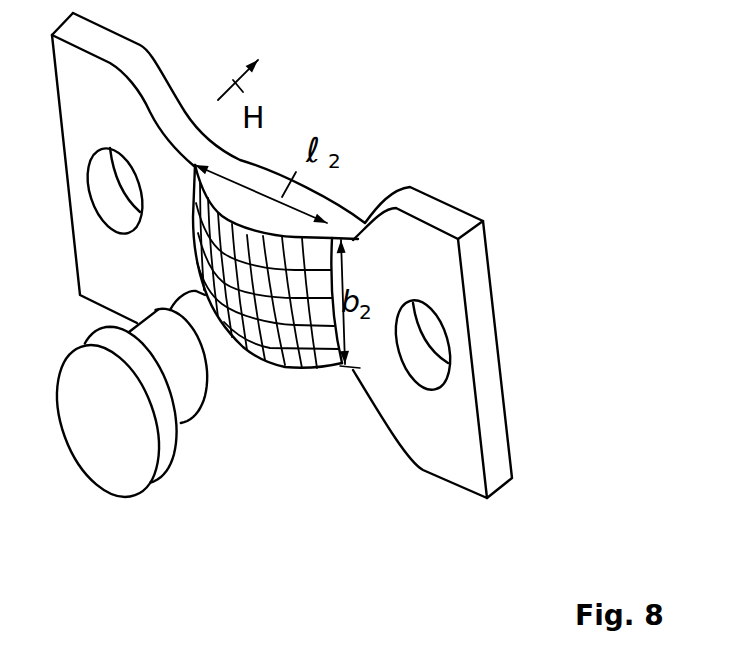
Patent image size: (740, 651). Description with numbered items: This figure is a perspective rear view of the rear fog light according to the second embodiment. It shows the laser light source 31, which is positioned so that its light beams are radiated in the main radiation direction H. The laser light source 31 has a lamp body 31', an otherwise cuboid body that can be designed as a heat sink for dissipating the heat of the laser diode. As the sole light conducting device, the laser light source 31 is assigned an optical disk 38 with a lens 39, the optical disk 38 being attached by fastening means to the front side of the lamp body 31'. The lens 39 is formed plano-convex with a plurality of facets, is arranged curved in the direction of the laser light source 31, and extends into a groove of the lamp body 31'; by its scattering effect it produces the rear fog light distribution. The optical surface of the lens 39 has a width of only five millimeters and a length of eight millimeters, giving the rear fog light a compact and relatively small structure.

The optical disk 38 is at (475, 283).
The lens 39 is at (292, 387).
The laser light source 31 is at (179, 457).
The lamp body 31' is at (108, 452).